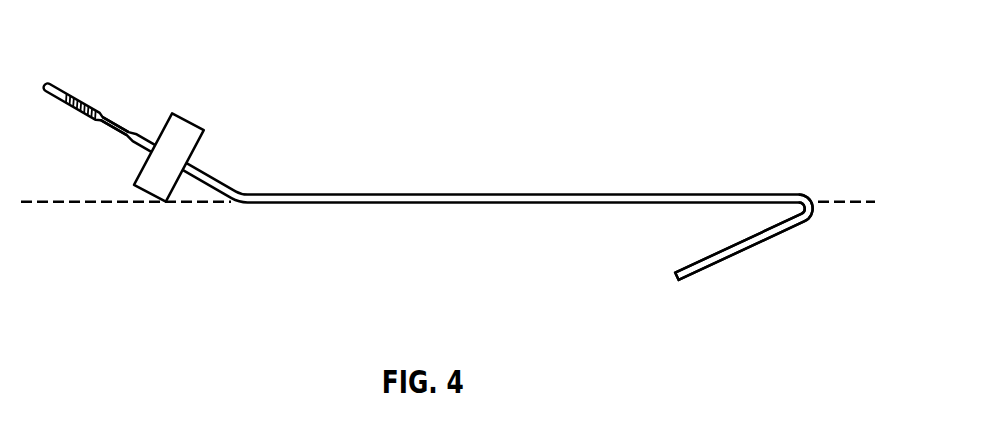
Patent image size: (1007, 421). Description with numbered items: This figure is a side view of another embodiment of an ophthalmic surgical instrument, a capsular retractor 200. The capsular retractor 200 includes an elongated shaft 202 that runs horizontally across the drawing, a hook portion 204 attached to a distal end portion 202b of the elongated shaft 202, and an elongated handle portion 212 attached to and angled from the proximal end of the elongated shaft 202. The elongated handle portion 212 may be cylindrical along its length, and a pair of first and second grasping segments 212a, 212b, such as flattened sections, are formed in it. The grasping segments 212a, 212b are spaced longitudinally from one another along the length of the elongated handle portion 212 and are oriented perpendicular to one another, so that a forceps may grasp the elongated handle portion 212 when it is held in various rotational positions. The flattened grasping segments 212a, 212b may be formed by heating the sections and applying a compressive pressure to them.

The capsular retractor 200 is at (425, 54).
The elongated shaft 202 is at (421, 190).
The distal end portion 202b is at (785, 194).
The hook portion 204 is at (715, 265).
The elongated handle portion 212 is at (217, 173).
The first grasping segment 212a is at (75, 98).
The second grasping segment 212b is at (120, 127).